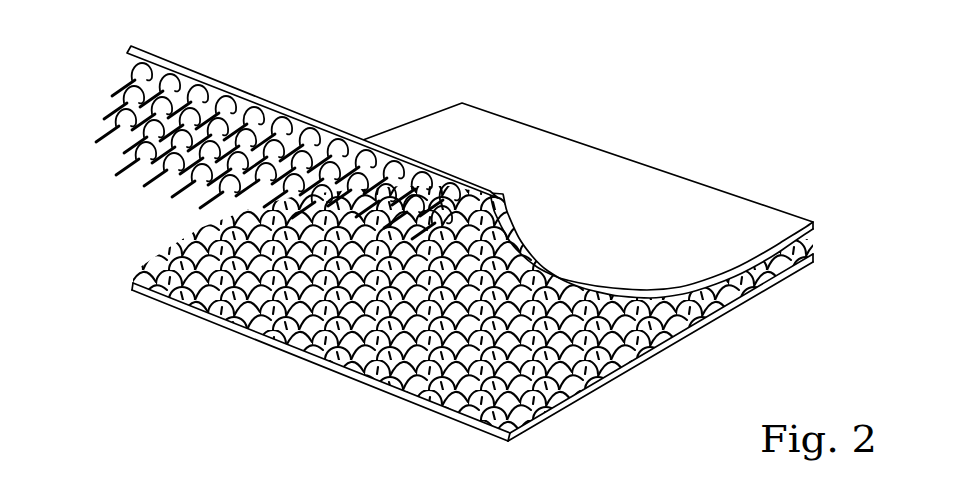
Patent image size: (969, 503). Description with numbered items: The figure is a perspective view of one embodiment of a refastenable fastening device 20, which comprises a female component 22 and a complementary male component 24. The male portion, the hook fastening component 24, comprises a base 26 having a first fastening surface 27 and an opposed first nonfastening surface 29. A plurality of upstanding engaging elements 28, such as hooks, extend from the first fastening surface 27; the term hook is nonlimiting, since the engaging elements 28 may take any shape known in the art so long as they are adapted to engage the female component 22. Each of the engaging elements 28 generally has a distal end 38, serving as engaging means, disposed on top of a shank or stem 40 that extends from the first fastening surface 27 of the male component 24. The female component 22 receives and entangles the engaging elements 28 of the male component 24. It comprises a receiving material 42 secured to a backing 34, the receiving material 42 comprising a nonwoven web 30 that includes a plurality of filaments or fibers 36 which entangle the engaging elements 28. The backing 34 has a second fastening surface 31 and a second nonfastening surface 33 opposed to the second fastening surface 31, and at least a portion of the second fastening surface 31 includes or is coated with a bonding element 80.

The fastening device 20 is at (435, 255).
The female component 22 is at (441, 283).
The hook fastening component 24 is at (431, 161).
The base 26 is at (185, 66).
The first fastening surface 27 is at (473, 207).
The engaging elements 28 is at (255, 145).
The first nonfastening surface 29 is at (557, 157).
The nonwoven web 30 is at (444, 260).
The second fastening surface 31 is at (667, 347).
The second nonfastening surface 33 is at (410, 403).
The backing 34 is at (147, 294).
The filaments 36 is at (303, 338).
The distal ends 38 is at (235, 162).
The stems 40 is at (110, 82).
The receiving material 42 is at (513, 420).
The bonding element 80 is at (485, 225).